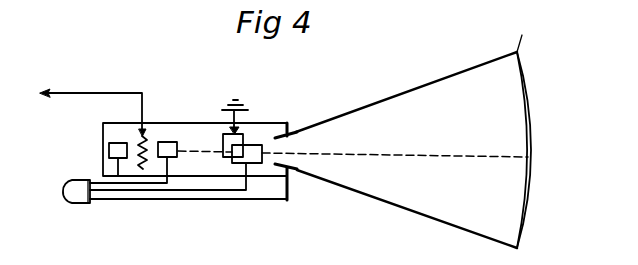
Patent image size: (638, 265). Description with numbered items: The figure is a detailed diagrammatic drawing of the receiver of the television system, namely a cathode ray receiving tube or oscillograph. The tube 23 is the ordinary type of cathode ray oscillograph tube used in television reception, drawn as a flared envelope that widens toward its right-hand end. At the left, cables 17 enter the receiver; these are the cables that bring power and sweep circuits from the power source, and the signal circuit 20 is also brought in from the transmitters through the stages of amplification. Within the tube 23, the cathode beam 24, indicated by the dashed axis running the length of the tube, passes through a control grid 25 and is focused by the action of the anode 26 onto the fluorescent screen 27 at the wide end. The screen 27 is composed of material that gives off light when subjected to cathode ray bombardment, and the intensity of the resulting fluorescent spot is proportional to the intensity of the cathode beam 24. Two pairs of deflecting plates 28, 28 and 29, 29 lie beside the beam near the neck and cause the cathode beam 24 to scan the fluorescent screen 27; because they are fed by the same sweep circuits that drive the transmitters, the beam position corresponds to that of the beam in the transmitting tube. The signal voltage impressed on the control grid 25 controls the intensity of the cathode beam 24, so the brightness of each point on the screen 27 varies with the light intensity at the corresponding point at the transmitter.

The cables 17 is at (70, 179).
The signal circuit 20 is at (97, 91).
The tube 23 is at (400, 92).
The cathode beam 24 is at (450, 161).
The control grid 25 is at (147, 134).
The anode 26 is at (176, 158).
The fluorescent screen 27 is at (533, 125).
The deflecting plates 28 is at (293, 133).
The deflecting plates 29 is at (242, 134).